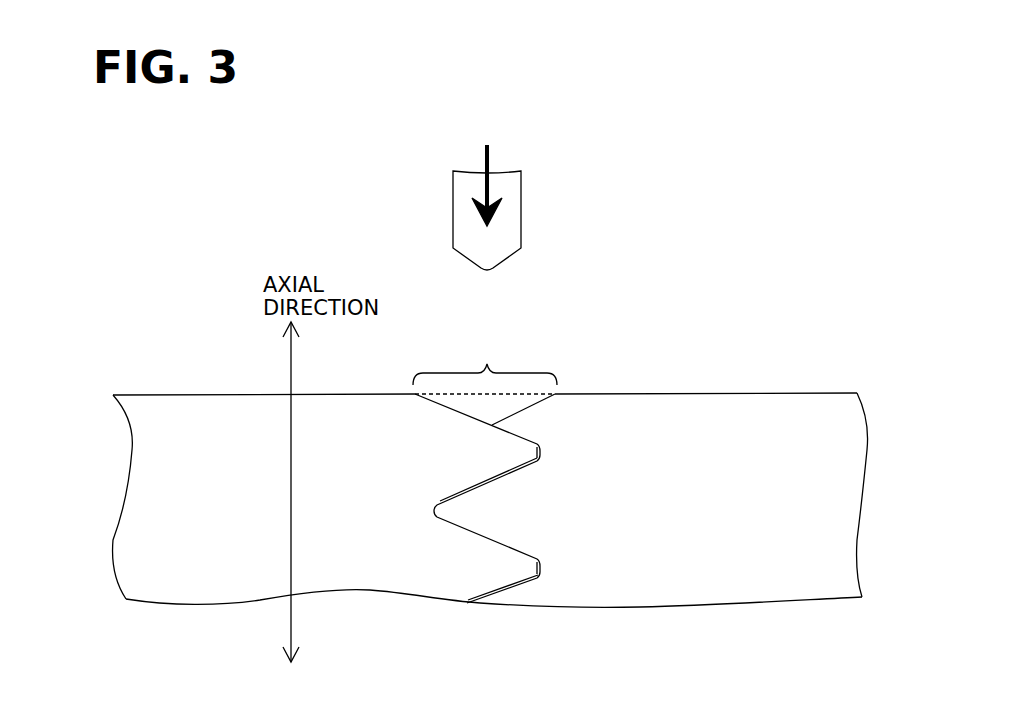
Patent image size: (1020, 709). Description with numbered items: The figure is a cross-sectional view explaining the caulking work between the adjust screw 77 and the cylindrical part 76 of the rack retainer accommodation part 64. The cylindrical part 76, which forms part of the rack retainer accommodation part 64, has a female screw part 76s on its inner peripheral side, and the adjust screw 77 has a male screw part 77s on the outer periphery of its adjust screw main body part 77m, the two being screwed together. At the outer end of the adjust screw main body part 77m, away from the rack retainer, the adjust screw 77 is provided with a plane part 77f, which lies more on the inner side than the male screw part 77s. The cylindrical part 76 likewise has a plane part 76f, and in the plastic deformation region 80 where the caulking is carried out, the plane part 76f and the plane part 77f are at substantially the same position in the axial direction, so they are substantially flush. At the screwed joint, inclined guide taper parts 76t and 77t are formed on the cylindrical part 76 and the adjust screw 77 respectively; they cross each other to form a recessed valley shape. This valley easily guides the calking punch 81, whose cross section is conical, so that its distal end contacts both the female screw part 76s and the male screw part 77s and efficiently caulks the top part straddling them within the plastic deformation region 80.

The rack retainer accommodation part 64 is at (826, 441).
The cylindrical part 76 is at (690, 556).
The plane part of the cylindrical part 76f is at (757, 393).
The taper part (guide taper part) of the cylindrical part 76t is at (527, 408).
The female screw part 76s is at (495, 528).
The adjust screw 77 is at (160, 478).
The plane part of the adjust screw 77f is at (208, 393).
The guide taper part of the adjust screw 77t is at (453, 408).
The male screw part 77s is at (477, 568).
The adjust screw main body part 77m is at (178, 557).
The plastic deformation region 80 is at (485, 366).
The calking punch 81 is at (507, 203).